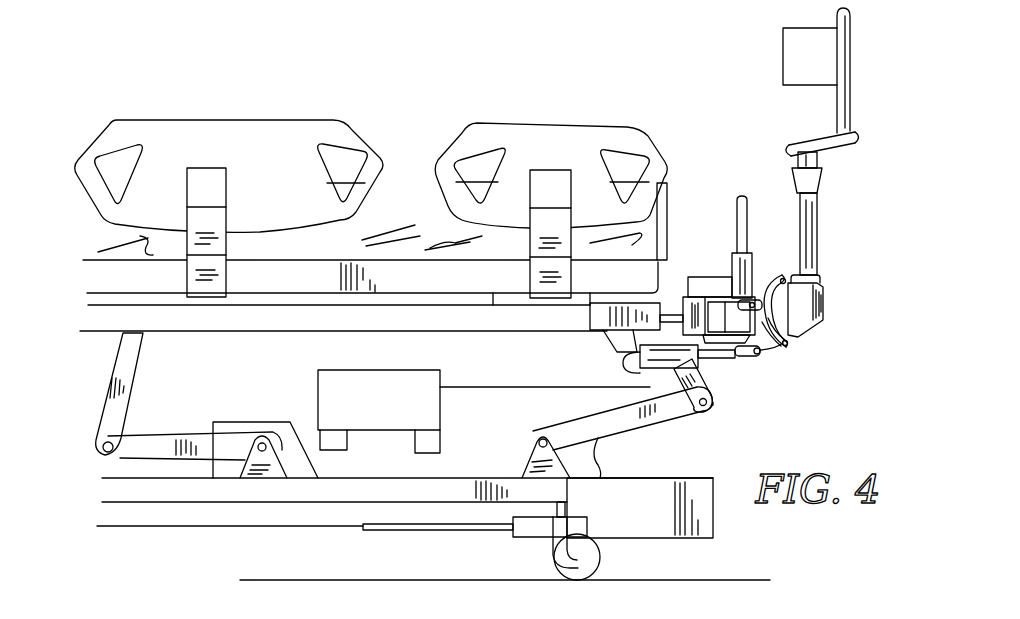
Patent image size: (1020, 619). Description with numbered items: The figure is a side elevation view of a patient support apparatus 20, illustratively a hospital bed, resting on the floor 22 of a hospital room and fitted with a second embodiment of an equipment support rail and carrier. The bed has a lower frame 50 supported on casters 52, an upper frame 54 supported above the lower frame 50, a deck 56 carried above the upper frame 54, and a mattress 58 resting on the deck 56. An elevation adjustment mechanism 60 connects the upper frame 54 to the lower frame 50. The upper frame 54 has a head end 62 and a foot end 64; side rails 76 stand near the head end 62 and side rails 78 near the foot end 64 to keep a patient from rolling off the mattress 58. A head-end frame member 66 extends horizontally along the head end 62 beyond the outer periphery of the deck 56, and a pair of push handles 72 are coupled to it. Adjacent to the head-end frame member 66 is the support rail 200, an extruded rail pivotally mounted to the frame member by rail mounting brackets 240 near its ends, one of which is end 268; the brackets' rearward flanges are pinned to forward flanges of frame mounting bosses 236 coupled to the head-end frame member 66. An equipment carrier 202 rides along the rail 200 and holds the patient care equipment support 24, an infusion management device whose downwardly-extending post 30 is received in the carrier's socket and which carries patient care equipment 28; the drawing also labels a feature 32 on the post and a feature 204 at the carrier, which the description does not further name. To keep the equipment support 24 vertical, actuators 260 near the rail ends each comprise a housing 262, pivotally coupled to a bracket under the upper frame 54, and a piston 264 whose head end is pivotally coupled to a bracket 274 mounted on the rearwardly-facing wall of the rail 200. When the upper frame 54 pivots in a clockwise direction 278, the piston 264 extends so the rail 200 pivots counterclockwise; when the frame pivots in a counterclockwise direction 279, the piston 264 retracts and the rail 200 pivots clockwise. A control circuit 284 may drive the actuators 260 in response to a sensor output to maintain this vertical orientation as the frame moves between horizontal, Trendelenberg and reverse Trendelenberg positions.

The patient support apparatus 20 is at (276, 113).
The floor 22 is at (745, 578).
The patient care equipment support 24 is at (757, 120).
The patient care equipment 28 is at (792, 53).
The post 30 is at (818, 216).
The pole knob 32 is at (794, 182).
The lower frame 50 is at (338, 515).
The casters 52 is at (600, 560).
The upper frame 54 is at (392, 318).
The deck 56 is at (462, 282).
The mattress 58 is at (398, 197).
The elevation adjustment mechanism 60 is at (614, 440).
The head end 62 is at (845, 303).
The foot end 64 is at (84, 251).
The head-end frame member 66 is at (687, 305).
The push handles 72 is at (733, 205).
The side rails 76 is at (566, 130).
The side rails 78 is at (180, 133).
The support rail 200 is at (783, 274).
The equipment carrier 202 is at (820, 333).
The collar 204 is at (815, 266).
The frame mounting bosses 236 is at (740, 325).
The rail mounting brackets 240 is at (805, 298).
The actuators 260 is at (704, 403).
The housing 262 is at (670, 372).
The piston 264 is at (728, 357).
The end 268 is at (617, 338).
The bracket 274 is at (775, 346).
The clockwise direction 278 is at (278, 236).
The counterclockwise direction 279 is at (200, 378).
The control circuit 284 is at (340, 397).